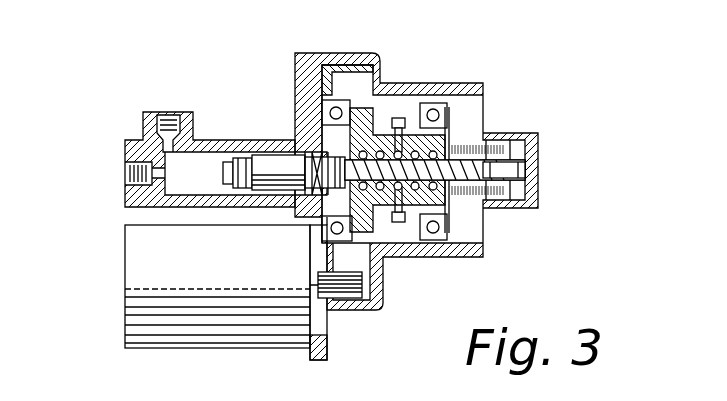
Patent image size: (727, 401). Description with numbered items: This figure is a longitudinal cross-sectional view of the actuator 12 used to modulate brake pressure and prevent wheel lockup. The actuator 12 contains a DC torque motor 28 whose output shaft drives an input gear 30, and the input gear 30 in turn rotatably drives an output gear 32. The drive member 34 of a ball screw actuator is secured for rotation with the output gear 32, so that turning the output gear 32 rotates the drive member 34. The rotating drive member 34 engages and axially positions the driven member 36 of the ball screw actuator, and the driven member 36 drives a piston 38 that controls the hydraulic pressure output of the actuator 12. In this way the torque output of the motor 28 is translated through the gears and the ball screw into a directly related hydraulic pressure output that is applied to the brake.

The actuator 12 is at (294, 184).
The DC torque motor 28 is at (140, 287).
The input gear 30 is at (353, 295).
The output gear 32 is at (337, 68).
The drive member 34 is at (358, 140).
The driven member 36 is at (486, 182).
The piston 38 is at (270, 150).